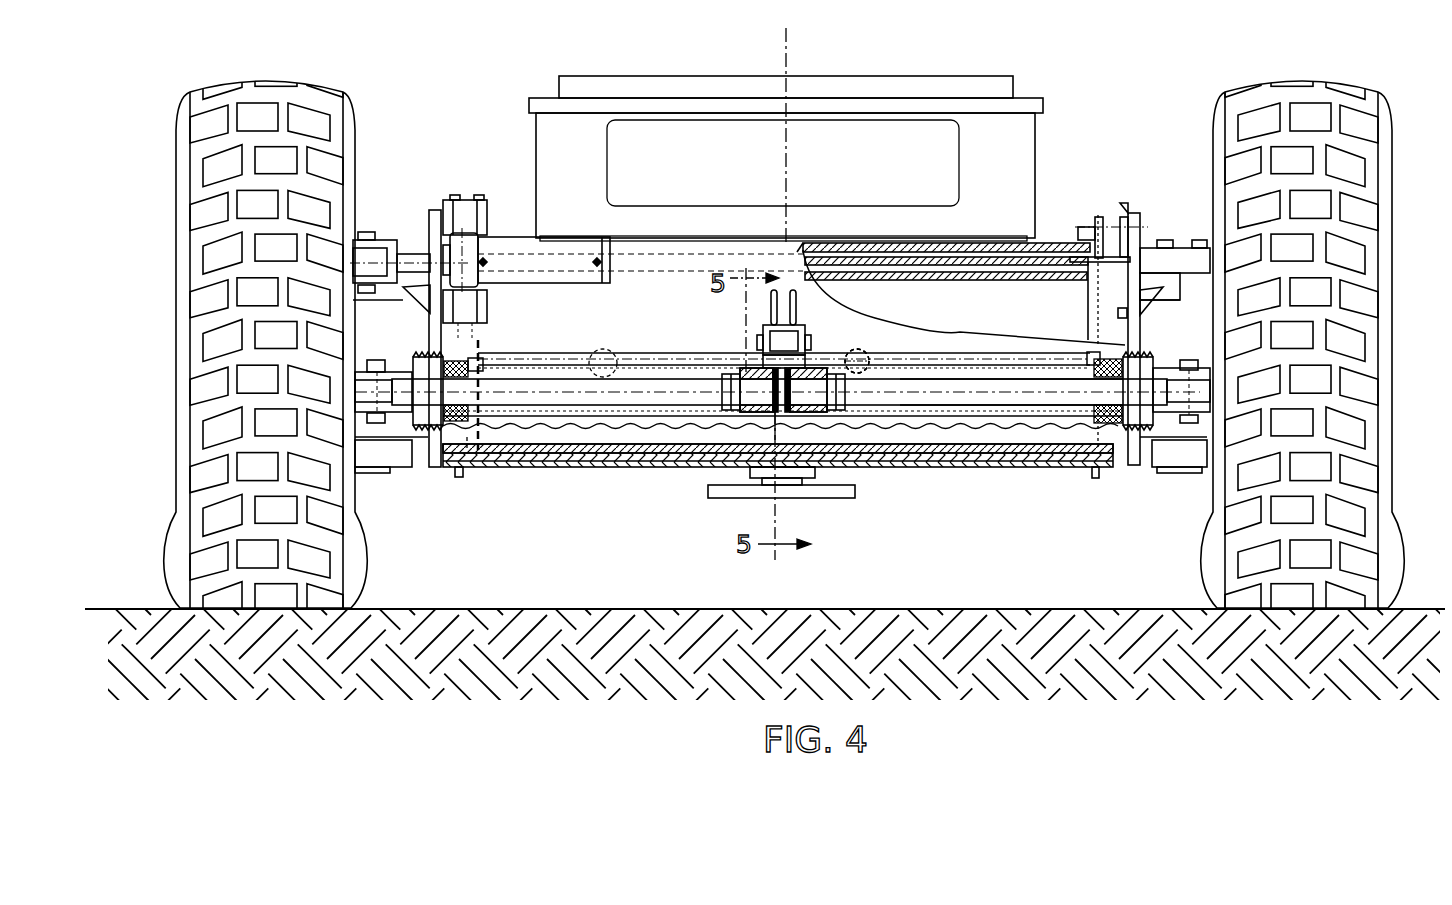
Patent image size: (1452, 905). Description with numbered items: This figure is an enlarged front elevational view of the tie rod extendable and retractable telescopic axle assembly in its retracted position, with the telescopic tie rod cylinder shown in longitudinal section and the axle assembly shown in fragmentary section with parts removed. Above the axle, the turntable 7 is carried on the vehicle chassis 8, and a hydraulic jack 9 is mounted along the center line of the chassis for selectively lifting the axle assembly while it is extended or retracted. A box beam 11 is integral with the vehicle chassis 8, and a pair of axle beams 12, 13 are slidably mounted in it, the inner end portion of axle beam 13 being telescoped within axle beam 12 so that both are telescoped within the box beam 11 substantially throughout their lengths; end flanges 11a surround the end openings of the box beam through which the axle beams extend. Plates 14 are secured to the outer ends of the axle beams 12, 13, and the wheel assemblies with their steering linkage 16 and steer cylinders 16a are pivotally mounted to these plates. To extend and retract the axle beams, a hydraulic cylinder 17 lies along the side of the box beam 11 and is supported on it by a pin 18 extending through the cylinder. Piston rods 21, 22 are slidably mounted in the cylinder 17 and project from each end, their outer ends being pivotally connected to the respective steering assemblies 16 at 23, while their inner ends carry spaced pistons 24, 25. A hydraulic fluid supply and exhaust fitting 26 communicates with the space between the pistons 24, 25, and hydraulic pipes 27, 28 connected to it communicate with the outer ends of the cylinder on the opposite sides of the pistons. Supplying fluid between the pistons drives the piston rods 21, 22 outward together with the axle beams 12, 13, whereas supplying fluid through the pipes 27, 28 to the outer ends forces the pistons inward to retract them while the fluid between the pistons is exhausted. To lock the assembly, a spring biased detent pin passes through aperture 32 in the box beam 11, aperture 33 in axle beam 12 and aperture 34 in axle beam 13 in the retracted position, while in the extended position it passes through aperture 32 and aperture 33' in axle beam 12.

The turntable 7 is at (990, 83).
The vehicle chassis 8 is at (1015, 158).
The hydraulic jack 9 is at (800, 492).
The box beam 11 is at (1050, 246).
The end flange 11a is at (1092, 226).
The axle beam 12 is at (1113, 263).
The axle beam 13 is at (1000, 281).
The plate 14 is at (430, 232).
The steering linkage 16 is at (383, 222).
The steer cylinder 16a is at (510, 222).
The hydraulic cylinder 17 is at (636, 414).
The pin 18 is at (786, 402).
The piston rod 21 is at (992, 393).
The piston rod 22 is at (558, 388).
The pivotal connection 23 is at (383, 353).
The piston 24 is at (808, 366).
The piston 25 is at (748, 366).
The hydraulic fluid supply and exhaust fitting 26 is at (797, 335).
The hydraulic pipe 27 is at (950, 347).
The hydraulic pipe 28 is at (510, 354).
The aperture 32 is at (866, 352).
The aperture 33 is at (894, 350).
The aperture 33' is at (625, 351).
The aperture 34 is at (860, 350).